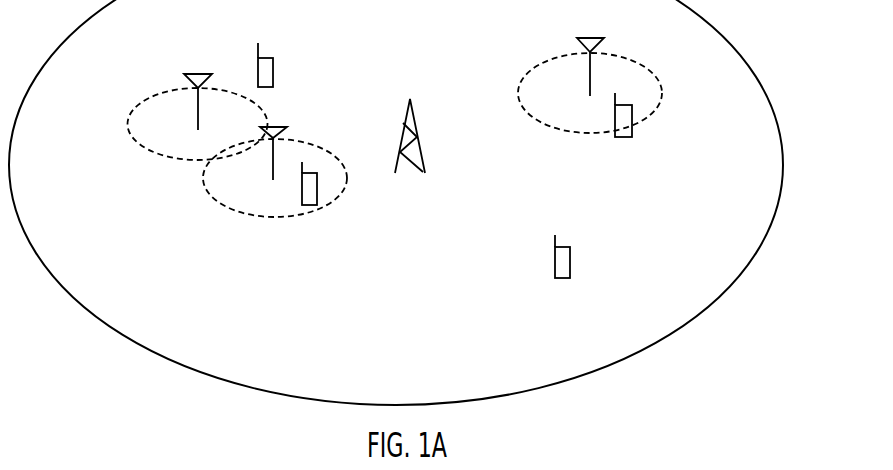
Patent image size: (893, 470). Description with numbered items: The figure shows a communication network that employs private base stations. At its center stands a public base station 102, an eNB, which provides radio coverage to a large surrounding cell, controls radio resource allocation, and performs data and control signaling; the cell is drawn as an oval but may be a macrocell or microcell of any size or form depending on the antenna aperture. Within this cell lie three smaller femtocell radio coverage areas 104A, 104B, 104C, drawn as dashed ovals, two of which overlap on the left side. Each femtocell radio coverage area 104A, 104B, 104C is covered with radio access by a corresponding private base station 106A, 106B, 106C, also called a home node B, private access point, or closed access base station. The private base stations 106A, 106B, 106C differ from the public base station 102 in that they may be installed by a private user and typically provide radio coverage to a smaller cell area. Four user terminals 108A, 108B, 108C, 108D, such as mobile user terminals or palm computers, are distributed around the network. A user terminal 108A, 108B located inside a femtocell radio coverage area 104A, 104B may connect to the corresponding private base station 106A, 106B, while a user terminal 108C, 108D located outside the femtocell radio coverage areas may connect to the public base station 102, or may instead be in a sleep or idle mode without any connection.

The public base station 102 is at (418, 138).
The femtocell radio coverage area 104A is at (660, 95).
The femtocell radio coverage area 104B is at (203, 170).
The femtocell radio coverage area 104C is at (127, 127).
The private base station 106A is at (590, 96).
The private base station 106B is at (273, 180).
The private base station 106C is at (198, 130).
The user terminal 108A is at (632, 137).
The user terminal 108B is at (317, 205).
The user terminal 108C is at (273, 87).
The user terminal 108D is at (570, 278).